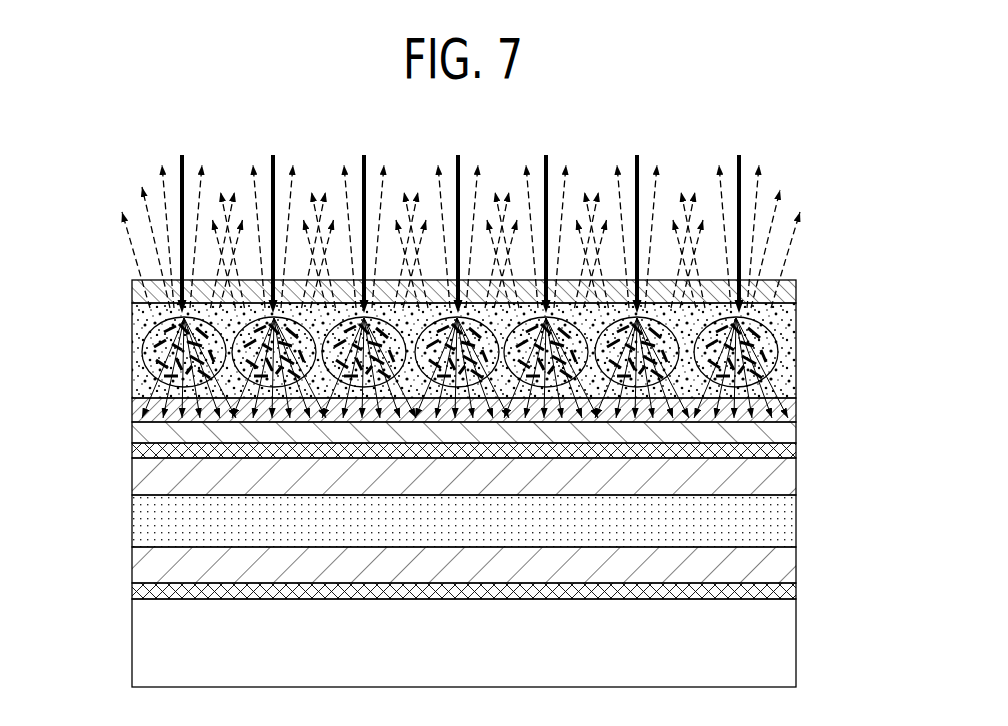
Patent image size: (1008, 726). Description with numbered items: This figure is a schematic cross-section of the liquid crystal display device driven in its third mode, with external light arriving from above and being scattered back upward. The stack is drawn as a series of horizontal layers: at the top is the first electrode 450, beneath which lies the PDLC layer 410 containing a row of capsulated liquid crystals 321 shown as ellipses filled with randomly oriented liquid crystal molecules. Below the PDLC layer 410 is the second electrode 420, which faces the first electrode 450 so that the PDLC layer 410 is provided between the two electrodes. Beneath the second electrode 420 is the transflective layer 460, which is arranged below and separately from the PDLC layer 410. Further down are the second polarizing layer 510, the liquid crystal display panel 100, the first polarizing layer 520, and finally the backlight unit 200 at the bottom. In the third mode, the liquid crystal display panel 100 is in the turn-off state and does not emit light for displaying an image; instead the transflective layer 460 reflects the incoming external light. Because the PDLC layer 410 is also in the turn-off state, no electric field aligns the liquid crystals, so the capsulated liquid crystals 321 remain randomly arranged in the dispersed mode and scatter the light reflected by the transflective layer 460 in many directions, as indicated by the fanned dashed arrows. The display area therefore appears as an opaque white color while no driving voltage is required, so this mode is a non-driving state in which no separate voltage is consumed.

The liquid crystal display panel 100 is at (803, 460).
The backlight unit 200 is at (780, 657).
The capsulated liquid crystal 321 is at (157, 372).
The PDLC layer 410 is at (803, 303).
The second electrode 420 is at (796, 406).
The first electrode 450 is at (783, 292).
The transflective layer 460 is at (796, 430).
The second polarizing layer 510 is at (795, 448).
The first polarizing layer 520 is at (783, 587).